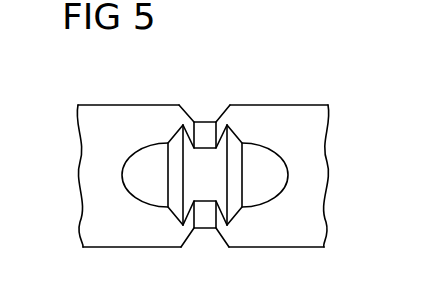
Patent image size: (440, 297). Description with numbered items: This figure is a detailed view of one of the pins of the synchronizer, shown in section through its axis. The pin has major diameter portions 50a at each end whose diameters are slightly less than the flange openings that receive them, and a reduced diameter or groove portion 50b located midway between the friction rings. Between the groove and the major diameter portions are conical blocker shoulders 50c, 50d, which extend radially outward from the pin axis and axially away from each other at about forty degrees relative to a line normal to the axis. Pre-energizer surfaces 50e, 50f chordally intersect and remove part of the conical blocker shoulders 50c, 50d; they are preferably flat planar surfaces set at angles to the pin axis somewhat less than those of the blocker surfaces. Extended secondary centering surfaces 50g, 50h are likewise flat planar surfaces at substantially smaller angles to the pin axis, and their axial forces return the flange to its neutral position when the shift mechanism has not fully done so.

The major diameter portions 50a is at (103, 105).
The reduced diameter or groove portion 50b is at (200, 121).
The conical blocker shoulder 50c is at (186, 115).
The conical blocker shoulder 50d is at (221, 115).
The pre-energizer surface 50e is at (178, 208).
The pre-energizer surface 50f is at (232, 210).
The secondary centering surface 50g is at (143, 181).
The secondary centering surface 50h is at (258, 166).